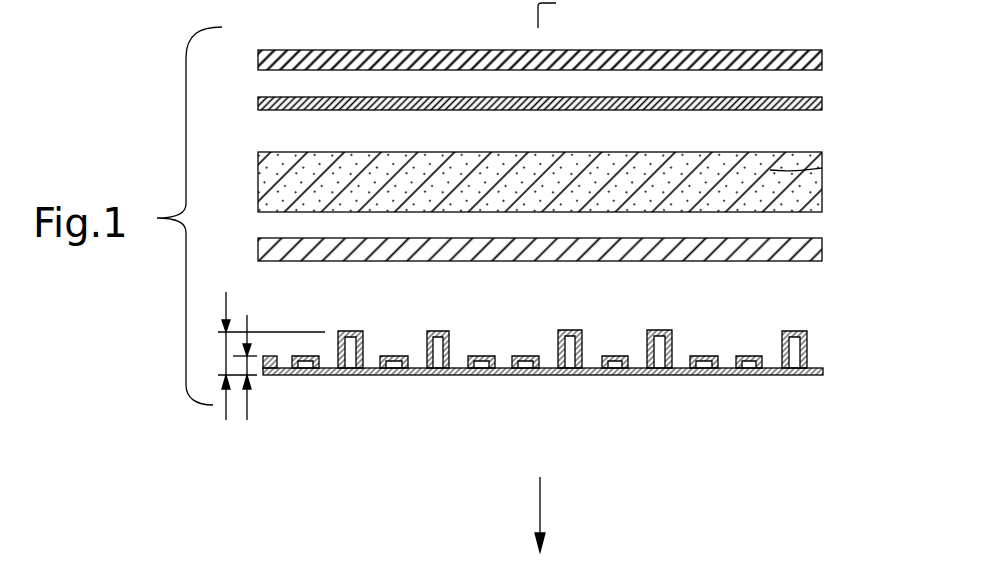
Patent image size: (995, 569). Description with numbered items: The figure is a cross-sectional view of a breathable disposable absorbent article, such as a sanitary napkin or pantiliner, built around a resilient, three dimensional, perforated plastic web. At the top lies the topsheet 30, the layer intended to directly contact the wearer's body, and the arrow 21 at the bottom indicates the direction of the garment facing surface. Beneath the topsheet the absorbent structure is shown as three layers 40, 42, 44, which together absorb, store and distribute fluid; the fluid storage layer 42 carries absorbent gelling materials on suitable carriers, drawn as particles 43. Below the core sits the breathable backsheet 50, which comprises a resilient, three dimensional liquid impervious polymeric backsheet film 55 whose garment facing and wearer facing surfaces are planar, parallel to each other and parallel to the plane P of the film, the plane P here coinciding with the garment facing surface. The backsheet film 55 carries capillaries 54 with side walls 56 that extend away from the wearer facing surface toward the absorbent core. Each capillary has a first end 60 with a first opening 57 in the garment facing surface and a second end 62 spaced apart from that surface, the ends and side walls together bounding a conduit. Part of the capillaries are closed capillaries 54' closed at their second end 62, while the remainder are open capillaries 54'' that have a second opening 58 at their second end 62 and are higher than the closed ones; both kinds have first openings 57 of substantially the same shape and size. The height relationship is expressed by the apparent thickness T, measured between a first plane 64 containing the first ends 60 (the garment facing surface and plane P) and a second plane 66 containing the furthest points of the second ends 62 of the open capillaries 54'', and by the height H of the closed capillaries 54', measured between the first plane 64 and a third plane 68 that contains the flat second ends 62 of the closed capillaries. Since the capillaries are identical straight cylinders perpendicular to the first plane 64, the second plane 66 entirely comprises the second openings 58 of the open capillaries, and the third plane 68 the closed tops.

The arrow 21 is at (541, 500).
The topsheet 30 is at (756, 51).
The absorbent core layer 40 is at (800, 97).
The fluid storage layer 42 is at (822, 183).
The particles 43 is at (822, 167).
The absorbent core layer 44 is at (805, 241).
The backsheet 50 is at (589, 364).
The capillaries 54 is at (568, 364).
The closed capillaries 54' is at (578, 377).
The open capillaries 54'' is at (658, 320).
The backsheet film 55 is at (774, 371).
The side walls 56 is at (560, 343).
The first opening 57 is at (439, 375).
The second opening 58 is at (437, 332).
The first end 60 is at (700, 373).
The second end 62 is at (653, 329).
The first plane 64 is at (263, 377).
The second plane 66 is at (301, 332).
The third plane 68 is at (292, 357).
The apparent thickness T is at (230, 284).
The height of the closed capillaries H is at (245, 432).
The plane of the backsheet film P is at (749, 370).